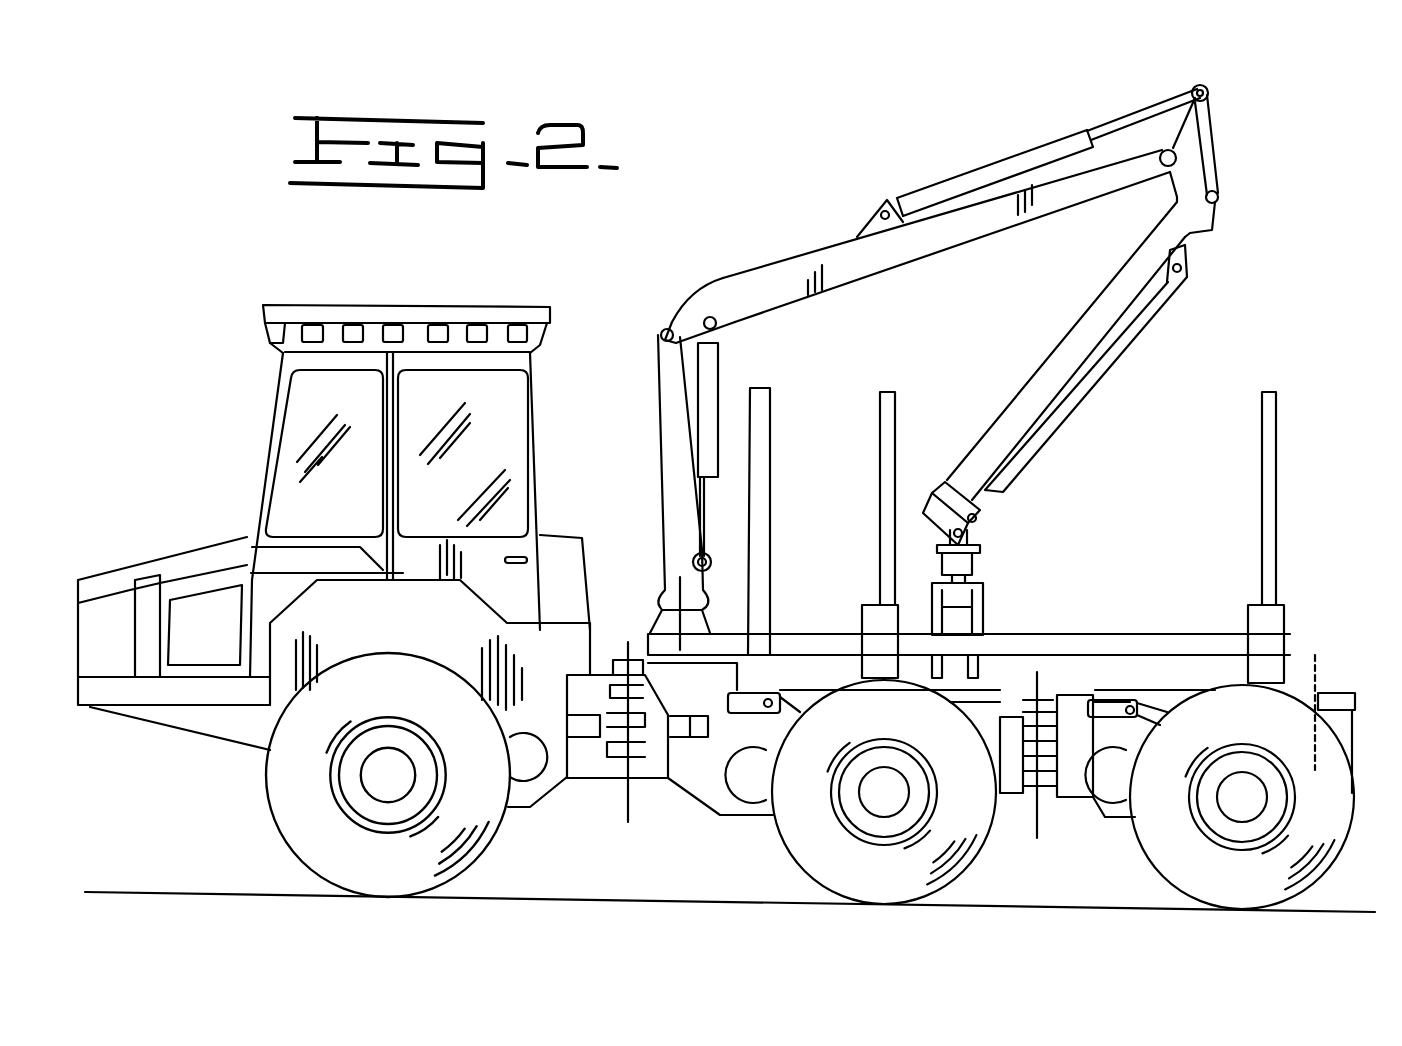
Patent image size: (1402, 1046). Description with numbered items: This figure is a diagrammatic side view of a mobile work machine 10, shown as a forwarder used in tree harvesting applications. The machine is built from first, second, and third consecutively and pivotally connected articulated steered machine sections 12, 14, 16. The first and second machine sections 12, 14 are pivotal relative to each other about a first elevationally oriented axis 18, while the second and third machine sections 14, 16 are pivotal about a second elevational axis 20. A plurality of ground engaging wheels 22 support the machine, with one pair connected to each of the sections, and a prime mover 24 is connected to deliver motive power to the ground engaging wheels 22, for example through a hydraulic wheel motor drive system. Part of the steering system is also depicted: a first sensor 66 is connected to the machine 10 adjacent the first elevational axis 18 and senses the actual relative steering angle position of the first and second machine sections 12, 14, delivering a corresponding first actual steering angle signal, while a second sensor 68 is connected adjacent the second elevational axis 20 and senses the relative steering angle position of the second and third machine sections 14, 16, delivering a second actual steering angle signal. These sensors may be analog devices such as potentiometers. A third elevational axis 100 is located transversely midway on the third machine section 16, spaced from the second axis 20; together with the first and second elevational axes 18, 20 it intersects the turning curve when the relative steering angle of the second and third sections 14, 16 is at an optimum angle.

The mobile work machine 10 is at (233, 373).
The first machine section 12 is at (413, 616).
The second machine section 14 is at (705, 775).
The third machine section 16 is at (1093, 810).
The first elevational axis 18 is at (622, 808).
The second elevational axis 20 is at (1057, 658).
The ground engaging wheels 22 is at (391, 875).
The prime mover 24 is at (144, 636).
The first sensor 66 is at (620, 663).
The second sensor 68 is at (1080, 677).
The third elevational axis 100 is at (1318, 662).